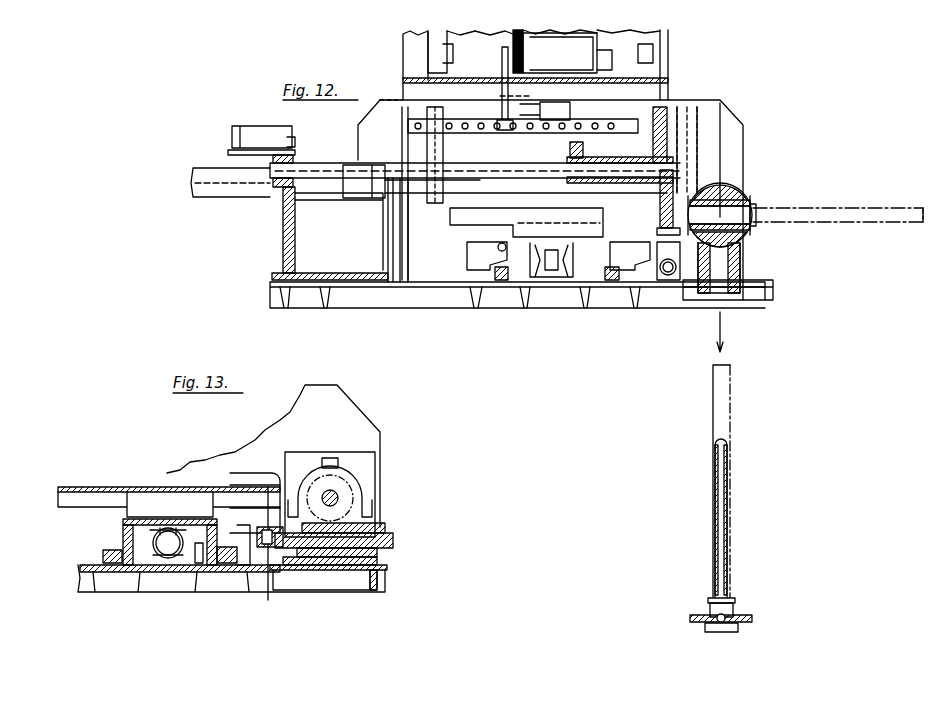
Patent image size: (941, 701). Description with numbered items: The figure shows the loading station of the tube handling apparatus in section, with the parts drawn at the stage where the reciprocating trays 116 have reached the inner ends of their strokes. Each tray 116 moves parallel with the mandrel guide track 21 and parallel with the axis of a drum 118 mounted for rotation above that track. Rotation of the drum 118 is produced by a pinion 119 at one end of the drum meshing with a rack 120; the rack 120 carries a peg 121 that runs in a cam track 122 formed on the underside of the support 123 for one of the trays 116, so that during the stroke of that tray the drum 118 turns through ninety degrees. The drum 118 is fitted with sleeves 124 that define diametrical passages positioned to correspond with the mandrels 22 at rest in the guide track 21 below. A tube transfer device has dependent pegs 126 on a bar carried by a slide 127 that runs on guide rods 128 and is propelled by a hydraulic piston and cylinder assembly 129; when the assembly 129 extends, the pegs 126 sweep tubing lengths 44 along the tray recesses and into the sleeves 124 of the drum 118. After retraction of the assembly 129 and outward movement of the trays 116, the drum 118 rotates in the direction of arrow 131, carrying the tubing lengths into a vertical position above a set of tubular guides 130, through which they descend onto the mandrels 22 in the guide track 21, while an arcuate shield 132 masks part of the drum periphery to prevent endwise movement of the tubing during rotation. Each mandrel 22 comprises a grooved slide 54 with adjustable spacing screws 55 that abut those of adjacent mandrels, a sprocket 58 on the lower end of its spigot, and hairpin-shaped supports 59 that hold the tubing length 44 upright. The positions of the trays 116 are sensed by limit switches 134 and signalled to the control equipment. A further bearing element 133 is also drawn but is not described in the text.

In FIG. 12, the tray 116 is at (465, 220).
In FIG. 13, the tray 116 is at (92, 488).
In FIG. 12, the drum 118 is at (745, 198).
In FIG. 13, the pinion 119 is at (345, 495).
In FIG. 13, the rack 120 is at (375, 523).
In FIG. 13, the peg 121 is at (270, 560).
In FIG. 13, the cam track 122 is at (265, 525).
In FIG. 13, the support 123 is at (237, 550).
In FIG. 12, the sleeve 124 is at (752, 208).
In FIG. 12, the peg 126 is at (700, 196).
In FIG. 12, the slide 127 is at (590, 157).
In FIG. 12, the guide rod 128 is at (465, 170).
In FIG. 12, the hydraulic piston and cylinder assembly 129 is at (246, 180).
In FIG. 12, the tubular guide 130 is at (735, 265).
In FIG. 12, the arrow 131 is at (755, 218).
In FIG. 12, the arcuate shield 132 is at (665, 282).
In FIG. 12, the bearing block 133 is at (548, 272).
In FIG. 13, the bearing block 133 is at (170, 543).
In FIG. 12, the limit switch 134 is at (482, 262).
In FIG. 12, the tubing length 44 is at (767, 211).
In FIG. 12, the mandrel 22 is at (747, 498).
In FIG. 12, the hairpin-shaped support 59 is at (720, 476).
In FIG. 12, the slide 54 is at (722, 605).
In FIG. 12, the spacing screw 55 is at (726, 612).
In FIG. 12, the mandrel guide track 21 is at (745, 617).
In FIG. 12, the sprocket 58 is at (739, 628).